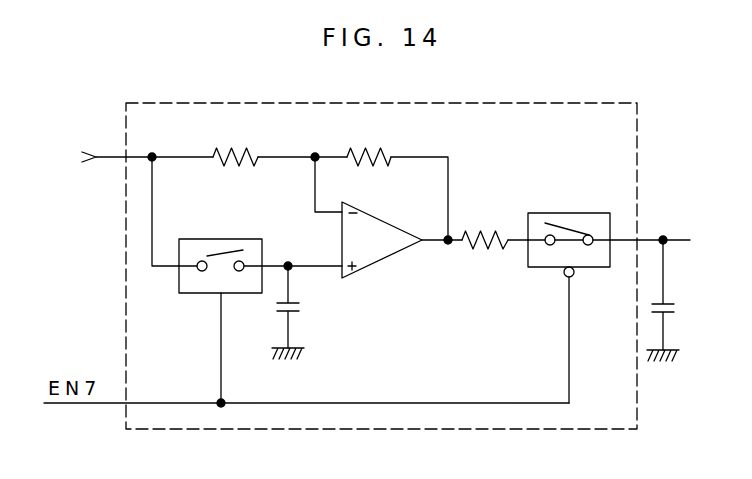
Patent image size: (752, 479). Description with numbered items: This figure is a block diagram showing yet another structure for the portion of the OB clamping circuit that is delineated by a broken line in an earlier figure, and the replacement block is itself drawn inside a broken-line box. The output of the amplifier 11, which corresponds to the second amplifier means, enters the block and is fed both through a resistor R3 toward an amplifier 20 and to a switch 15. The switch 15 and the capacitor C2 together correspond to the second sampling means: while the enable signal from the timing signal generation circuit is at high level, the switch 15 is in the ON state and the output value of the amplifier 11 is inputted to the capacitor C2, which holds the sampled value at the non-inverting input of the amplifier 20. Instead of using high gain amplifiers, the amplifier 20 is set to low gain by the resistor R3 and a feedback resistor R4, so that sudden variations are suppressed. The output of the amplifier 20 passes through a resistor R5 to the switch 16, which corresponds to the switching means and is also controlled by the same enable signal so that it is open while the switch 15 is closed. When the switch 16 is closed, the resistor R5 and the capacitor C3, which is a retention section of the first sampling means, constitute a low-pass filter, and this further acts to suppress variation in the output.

The amplifier 11 is at (117, 156).
The switch 15 is at (208, 238).
The switch 16 is at (586, 212).
The amplifier 20 is at (383, 263).
The resistor R3 is at (235, 142).
The resistor R4 is at (368, 142).
The resistor R5 is at (485, 226).
The capacitor C2 is at (306, 312).
The capacitor C3 is at (682, 300).